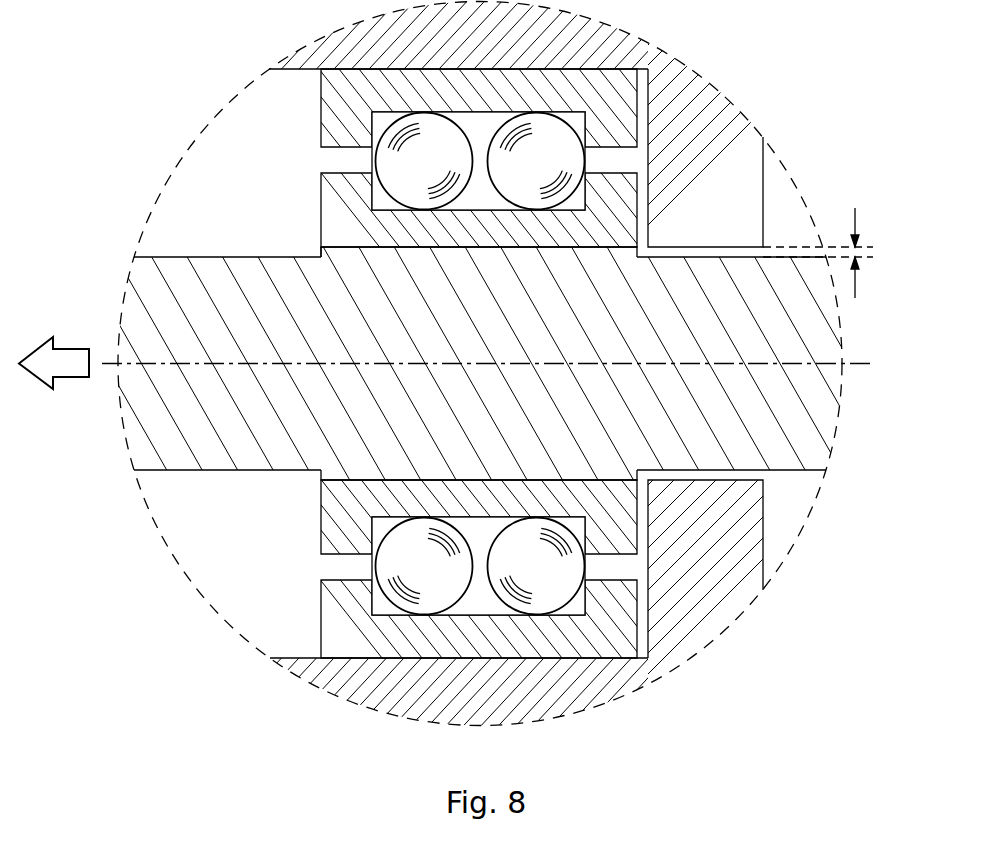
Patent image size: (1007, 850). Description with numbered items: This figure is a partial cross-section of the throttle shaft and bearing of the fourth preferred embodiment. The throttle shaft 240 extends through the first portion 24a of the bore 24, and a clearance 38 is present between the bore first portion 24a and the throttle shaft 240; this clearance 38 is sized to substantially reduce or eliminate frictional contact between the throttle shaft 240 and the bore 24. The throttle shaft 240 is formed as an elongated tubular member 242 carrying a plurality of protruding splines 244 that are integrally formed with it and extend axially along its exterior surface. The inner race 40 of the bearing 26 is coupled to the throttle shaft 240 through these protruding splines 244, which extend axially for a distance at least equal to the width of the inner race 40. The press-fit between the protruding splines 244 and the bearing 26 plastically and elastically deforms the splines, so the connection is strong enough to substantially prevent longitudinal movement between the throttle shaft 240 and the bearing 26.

The bearing 26 is at (255, 143).
The first portion of the bore 24a is at (722, 250).
The inner race 40 is at (625, 197).
The bore 24 is at (776, 480).
The throttle shaft 240 is at (165, 452).
The elongated tubular member 242 is at (813, 412).
The protruding splines 244 is at (320, 248).
The clearance 38 is at (818, 240).